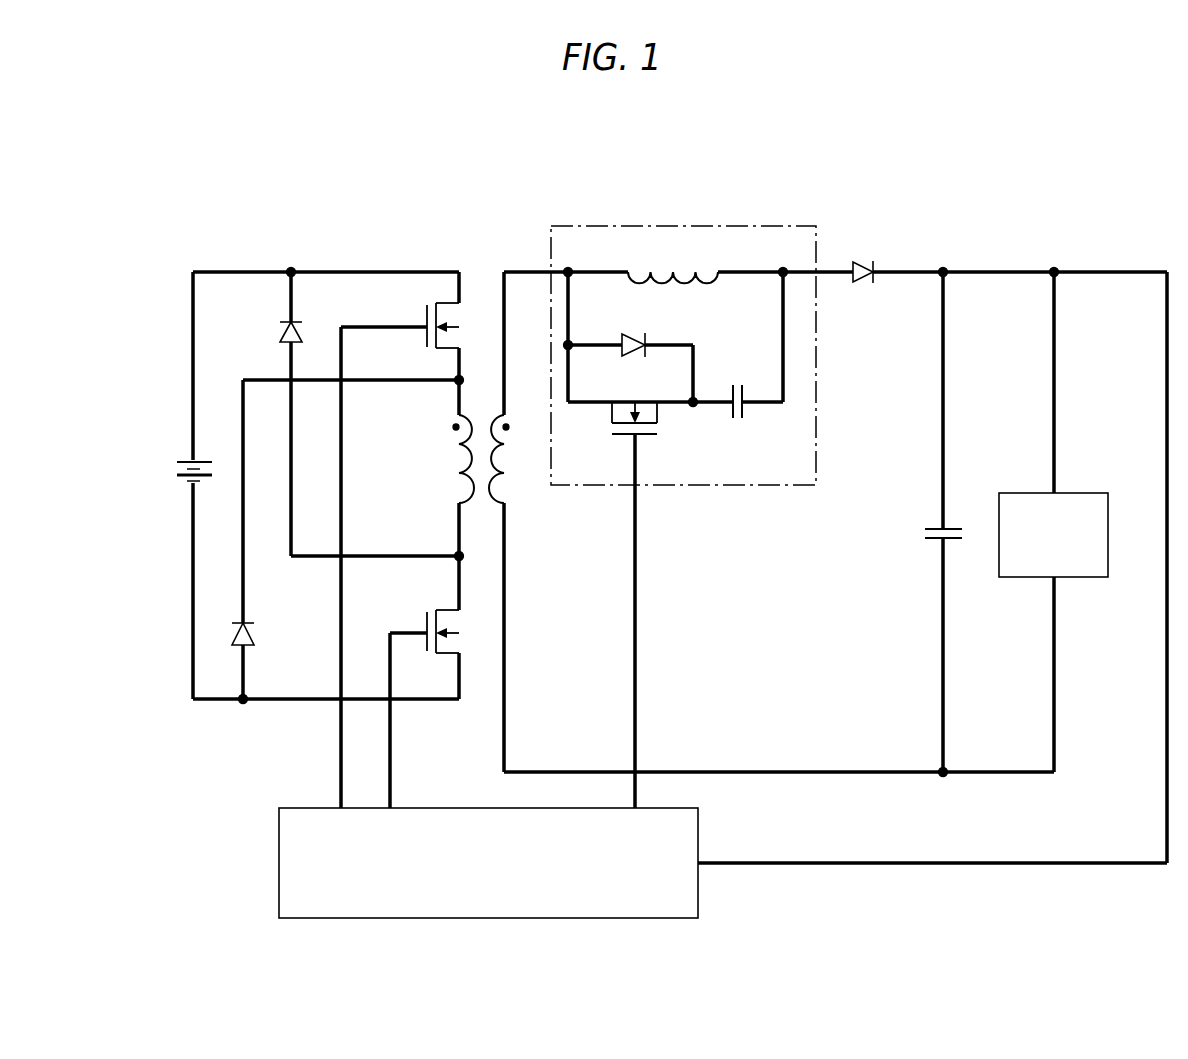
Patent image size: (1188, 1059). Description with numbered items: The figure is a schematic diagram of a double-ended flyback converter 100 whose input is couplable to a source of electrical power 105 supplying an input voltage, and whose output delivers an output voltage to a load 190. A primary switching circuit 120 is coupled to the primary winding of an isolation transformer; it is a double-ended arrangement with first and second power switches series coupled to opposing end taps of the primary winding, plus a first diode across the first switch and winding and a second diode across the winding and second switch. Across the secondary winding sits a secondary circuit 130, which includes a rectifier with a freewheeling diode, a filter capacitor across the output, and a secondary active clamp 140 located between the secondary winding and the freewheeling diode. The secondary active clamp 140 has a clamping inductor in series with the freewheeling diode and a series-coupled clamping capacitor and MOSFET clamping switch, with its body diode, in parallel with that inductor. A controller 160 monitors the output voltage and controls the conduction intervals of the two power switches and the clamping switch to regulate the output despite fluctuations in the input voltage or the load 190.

The double-ended flyback converter 100 is at (497, 200).
The source of electrical power 105 is at (173, 469).
The primary switching circuit 120 is at (455, 212).
The secondary circuit 130 is at (980, 212).
The secondary active clamp 140 is at (683, 517).
The controller 160 is at (488, 863).
The load 190 is at (1053, 535).